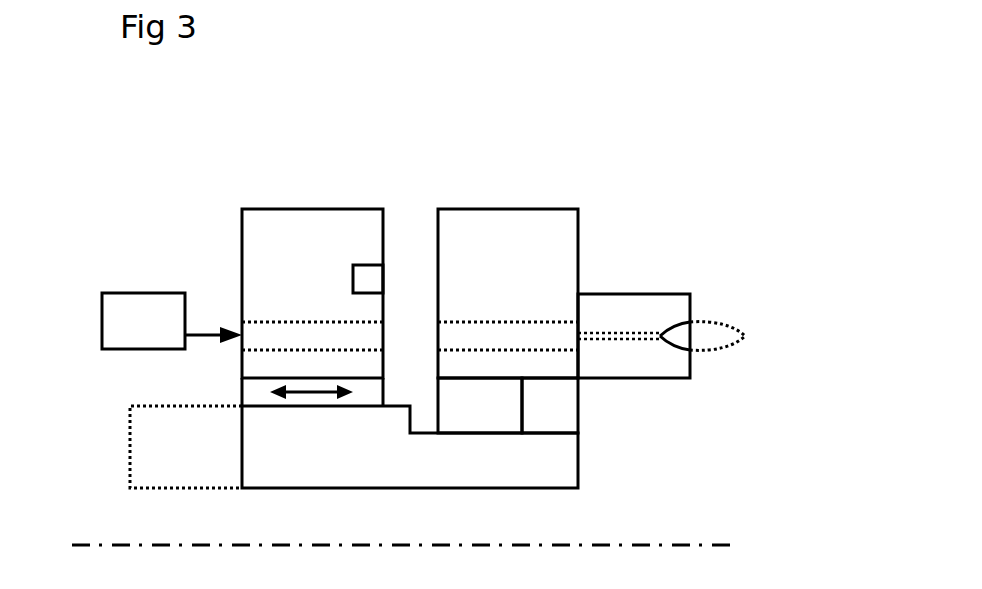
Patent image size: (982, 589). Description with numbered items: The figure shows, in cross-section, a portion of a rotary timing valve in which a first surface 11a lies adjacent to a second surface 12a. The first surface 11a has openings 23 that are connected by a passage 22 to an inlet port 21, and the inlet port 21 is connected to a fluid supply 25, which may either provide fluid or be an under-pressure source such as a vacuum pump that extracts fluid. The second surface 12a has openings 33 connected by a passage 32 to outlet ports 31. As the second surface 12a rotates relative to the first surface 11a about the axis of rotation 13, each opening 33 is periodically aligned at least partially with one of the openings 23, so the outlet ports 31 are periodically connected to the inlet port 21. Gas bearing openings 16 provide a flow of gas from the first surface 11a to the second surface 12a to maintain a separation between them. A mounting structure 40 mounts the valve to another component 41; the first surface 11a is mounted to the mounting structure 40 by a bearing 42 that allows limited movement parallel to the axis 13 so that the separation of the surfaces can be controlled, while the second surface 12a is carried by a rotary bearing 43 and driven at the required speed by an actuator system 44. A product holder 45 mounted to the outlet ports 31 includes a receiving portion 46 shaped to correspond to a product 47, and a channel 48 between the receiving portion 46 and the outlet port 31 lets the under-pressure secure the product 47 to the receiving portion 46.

The axis of rotation 13 is at (692, 545).
The gas bearing openings 16 is at (353, 265).
The first surface 11a is at (383, 237).
The second surface 12a is at (438, 237).
The inlet port 21 is at (240, 322).
The passage 22 is at (327, 322).
The openings 23 is at (384, 334).
The fluid supply 25 is at (158, 293).
The outlet ports 31 is at (580, 334).
The passage 32 is at (552, 322).
The openings 33 is at (438, 334).
The mounting structure 40 is at (548, 489).
The component 41 is at (130, 477).
The bearing 42 is at (241, 392).
The rotary bearing 43 is at (493, 434).
The actuator system 44 is at (578, 395).
The product holder 45 is at (662, 294).
The receiving portion 46 is at (675, 323).
The product 47 is at (745, 336).
The channel 48 is at (633, 340).